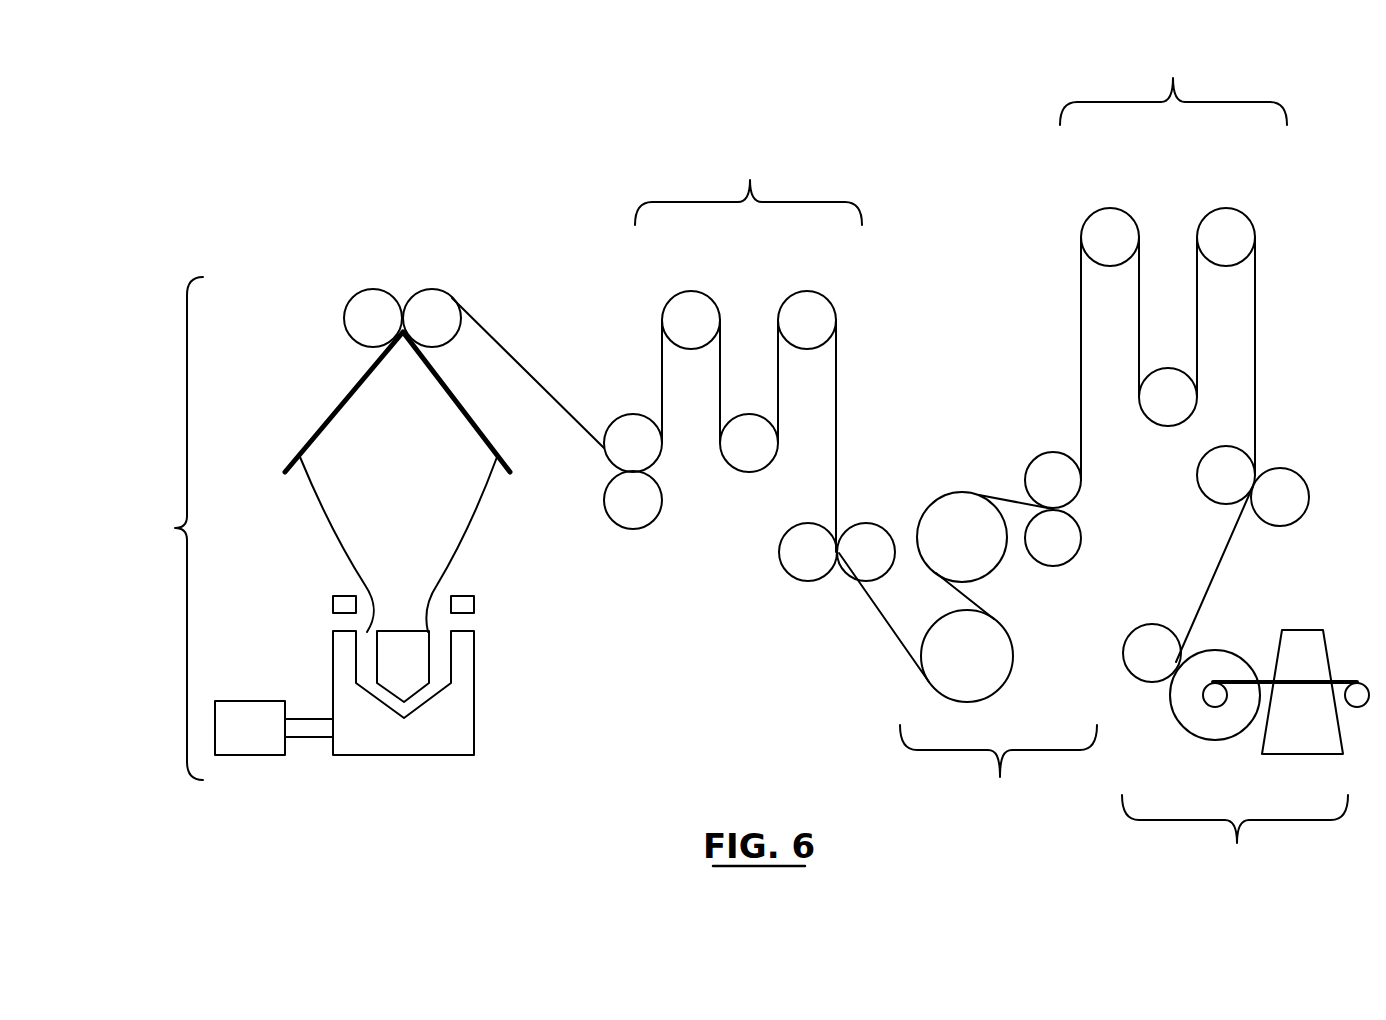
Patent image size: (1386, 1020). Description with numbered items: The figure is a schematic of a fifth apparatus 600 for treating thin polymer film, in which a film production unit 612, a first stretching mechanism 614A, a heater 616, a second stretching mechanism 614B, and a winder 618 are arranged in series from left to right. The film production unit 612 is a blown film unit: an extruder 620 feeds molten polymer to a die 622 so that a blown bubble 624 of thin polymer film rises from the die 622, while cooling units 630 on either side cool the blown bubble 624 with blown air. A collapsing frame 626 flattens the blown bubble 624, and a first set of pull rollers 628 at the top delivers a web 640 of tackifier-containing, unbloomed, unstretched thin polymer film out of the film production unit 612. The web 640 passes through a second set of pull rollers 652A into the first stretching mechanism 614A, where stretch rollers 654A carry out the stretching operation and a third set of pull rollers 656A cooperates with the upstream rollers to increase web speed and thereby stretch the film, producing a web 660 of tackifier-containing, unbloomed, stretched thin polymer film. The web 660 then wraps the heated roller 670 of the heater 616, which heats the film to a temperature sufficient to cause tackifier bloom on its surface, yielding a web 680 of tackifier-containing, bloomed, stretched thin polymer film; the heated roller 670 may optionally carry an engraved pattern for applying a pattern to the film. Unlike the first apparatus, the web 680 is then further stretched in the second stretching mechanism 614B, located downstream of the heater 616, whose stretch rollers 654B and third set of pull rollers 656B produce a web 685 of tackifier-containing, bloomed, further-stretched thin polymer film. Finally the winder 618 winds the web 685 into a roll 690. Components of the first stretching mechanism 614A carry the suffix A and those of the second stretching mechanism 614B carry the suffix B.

The apparatus 600 is at (263, 215).
The film production unit 612 is at (369, 488).
The first stretching mechanism 614A is at (702, 408).
The second stretching mechanism 614B is at (1199, 355).
The heater 616 is at (968, 601).
The winder 618 is at (1245, 748).
The extruder 620 is at (232, 741).
The die 622 is at (410, 648).
The blown bubble 624 is at (475, 553).
The collapsing frame 626 is at (318, 413).
The first set of pull rollers 628 is at (403, 280).
The cooling units 630 is at (343, 596).
The web of tackifier-containing, unbloomed, unstretched thin polymer film 640 is at (523, 353).
The second set of pull rollers 652A is at (600, 473).
The stretch rollers 654A is at (695, 313).
The stretch rollers 654B is at (1117, 228).
The third set of pull rollers 656A is at (822, 583).
The third set of pull rollers 656B is at (1308, 518).
The web of tackifier-containing, unbloomed, stretched thin polymer film 660 is at (882, 657).
The heated roller 670 is at (940, 550).
The web of tackifier-containing, bloomed, stretched thin polymer film 680 is at (995, 490).
The web of tackifier-containing, bloomed, further-stretched thin polymer film 685 is at (1205, 577).
The roll 690 is at (1210, 727).